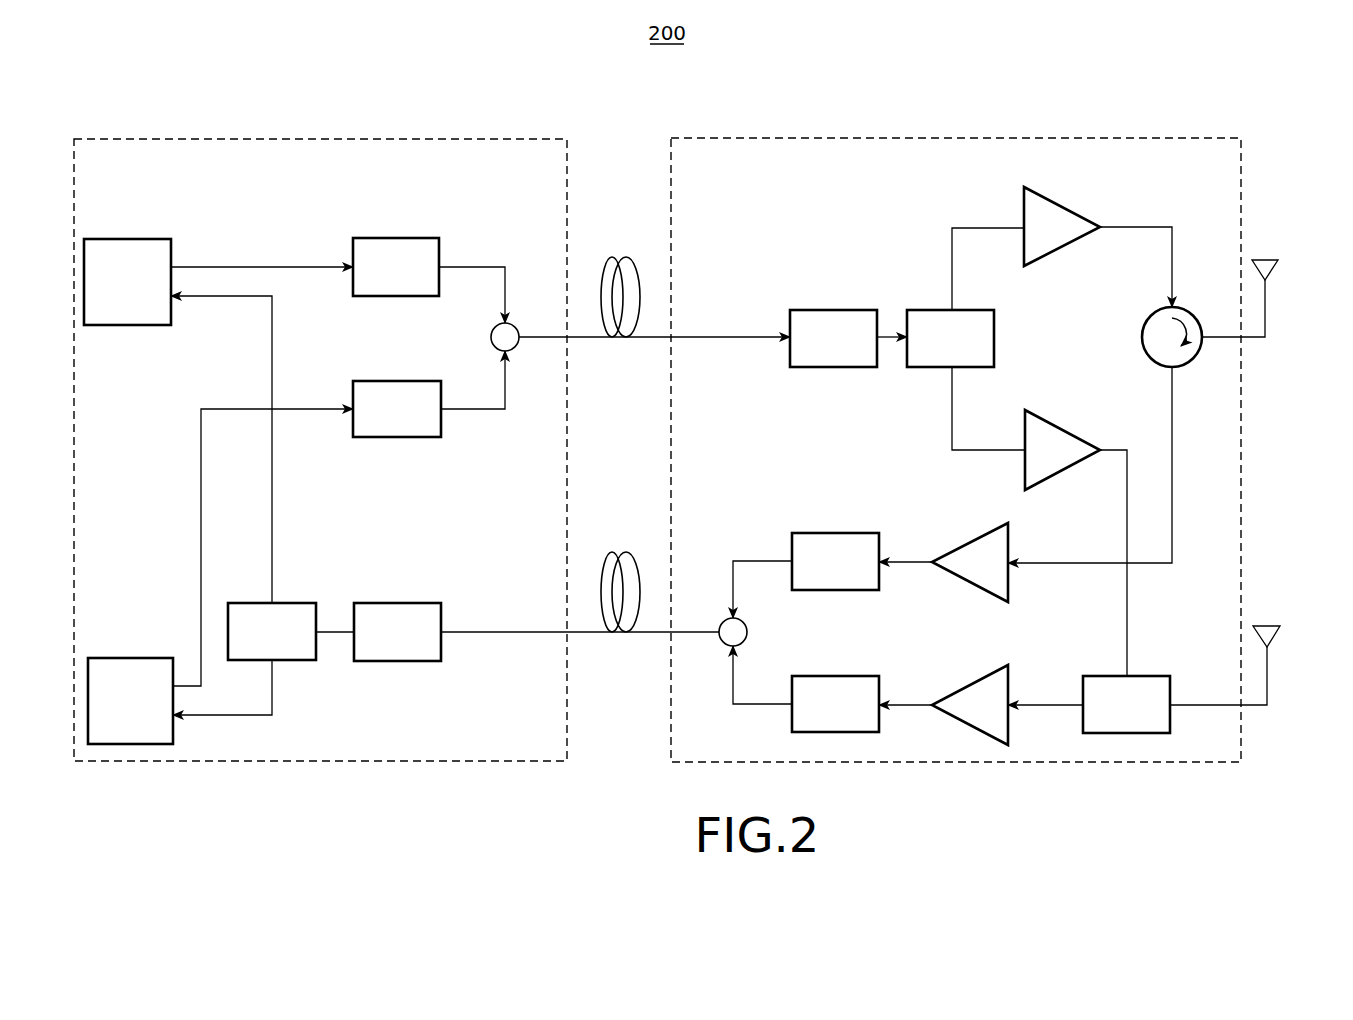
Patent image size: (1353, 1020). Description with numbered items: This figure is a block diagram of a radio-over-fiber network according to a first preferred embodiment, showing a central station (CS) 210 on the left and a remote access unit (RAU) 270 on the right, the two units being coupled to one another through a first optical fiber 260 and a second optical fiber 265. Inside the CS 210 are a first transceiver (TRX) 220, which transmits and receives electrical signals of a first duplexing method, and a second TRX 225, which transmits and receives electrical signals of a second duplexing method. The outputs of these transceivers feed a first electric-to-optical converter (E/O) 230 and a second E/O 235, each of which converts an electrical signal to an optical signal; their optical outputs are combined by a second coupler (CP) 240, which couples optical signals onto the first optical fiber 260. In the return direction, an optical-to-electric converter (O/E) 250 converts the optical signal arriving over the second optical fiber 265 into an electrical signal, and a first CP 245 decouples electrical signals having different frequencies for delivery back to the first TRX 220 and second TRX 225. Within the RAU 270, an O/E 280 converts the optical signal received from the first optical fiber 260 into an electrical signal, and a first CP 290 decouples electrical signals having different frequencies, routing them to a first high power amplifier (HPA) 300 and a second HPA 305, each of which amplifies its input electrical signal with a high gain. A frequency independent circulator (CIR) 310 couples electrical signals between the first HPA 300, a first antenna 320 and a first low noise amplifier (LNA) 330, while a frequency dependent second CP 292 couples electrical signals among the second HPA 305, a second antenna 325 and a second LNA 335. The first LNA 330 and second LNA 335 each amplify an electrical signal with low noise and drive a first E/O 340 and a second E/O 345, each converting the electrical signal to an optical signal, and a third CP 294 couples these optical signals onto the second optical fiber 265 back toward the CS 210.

The central station (CS) 210 is at (319, 138).
The first transceiver (TRX) 220 is at (127, 239).
The second transceiver (TRX) 225 is at (129, 658).
The first electric-to-optical converter (E/O) 230 is at (396, 238).
The second electric-to-optical converter (E/O) 235 is at (396, 381).
The second coupler (CP) 240 is at (491, 338).
The first coupler (CP) 245 is at (243, 603).
The optical-to-electric converter (O/E) 250 is at (396, 603).
The first optical fiber 260 is at (626, 257).
The second optical fiber 265 is at (626, 552).
The remote access unit (RAU) 270 is at (951, 138).
The optical-to-electric converter (O/E) 280 is at (833, 310).
The first coupler (CP) 290 is at (996, 337).
The second coupler (CP) 292 is at (1099, 676).
The third coupler (CP) 294 is at (747, 632).
The first high power amplifier (HPA) 300 is at (1061, 201).
The second high power amplifier (HPA) 305 is at (1061, 422).
The frequency independent circulator (CIR) 310 is at (1143, 337).
The first antenna 320 is at (1278, 266).
The second antenna 325 is at (1280, 633).
The first low noise amplifier (LNA) 330 is at (969, 539).
The second low noise amplifier (LNA) 335 is at (969, 680).
The first electric-to-optical converter (E/O) 340 is at (834, 533).
The second electric-to-optical converter (E/O) 345 is at (834, 676).